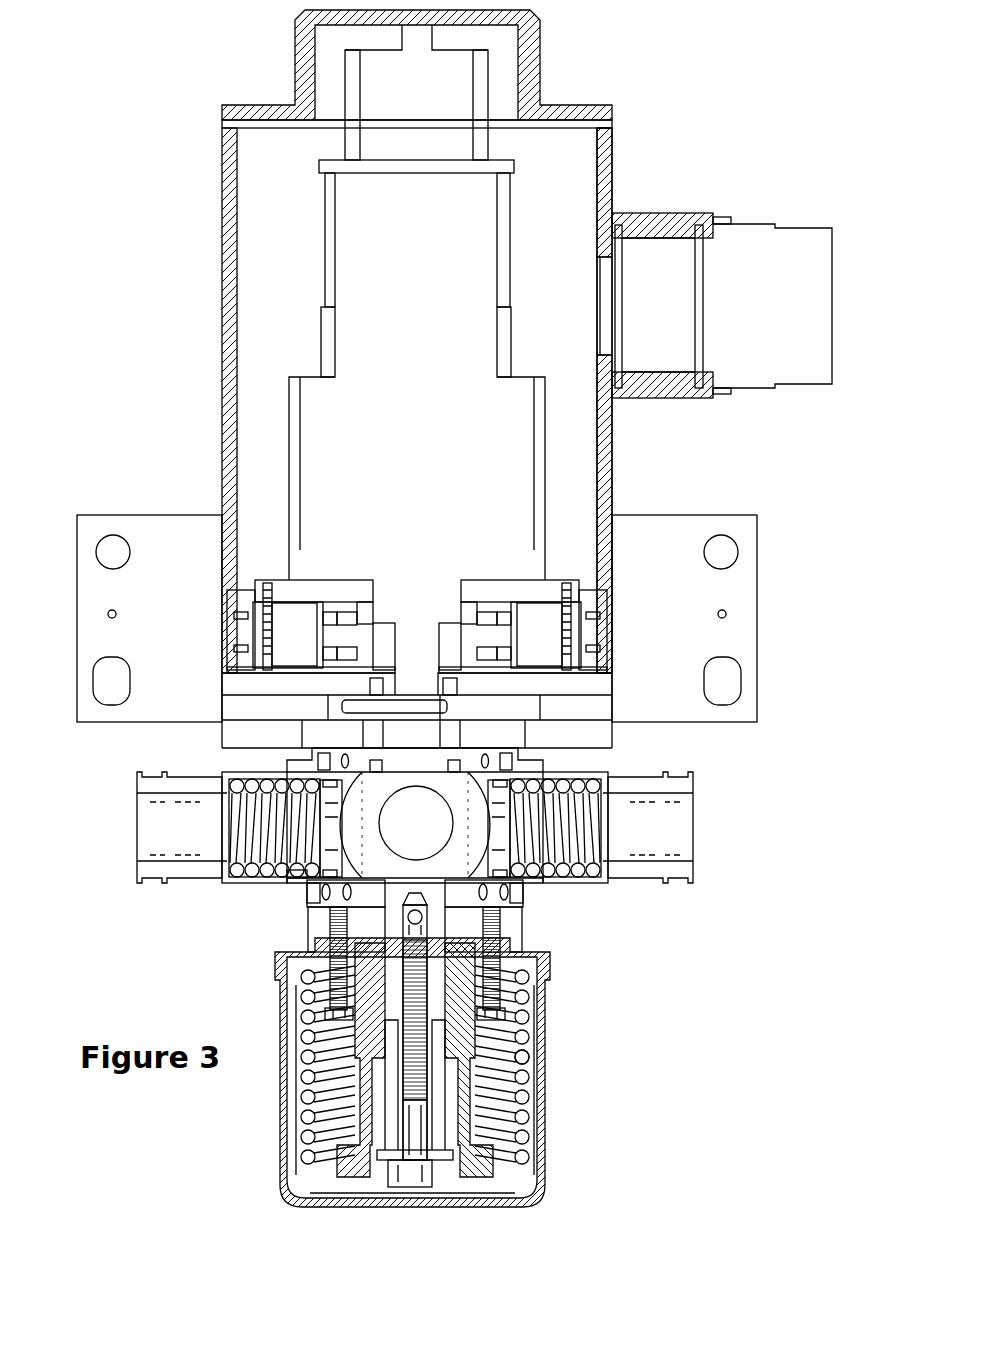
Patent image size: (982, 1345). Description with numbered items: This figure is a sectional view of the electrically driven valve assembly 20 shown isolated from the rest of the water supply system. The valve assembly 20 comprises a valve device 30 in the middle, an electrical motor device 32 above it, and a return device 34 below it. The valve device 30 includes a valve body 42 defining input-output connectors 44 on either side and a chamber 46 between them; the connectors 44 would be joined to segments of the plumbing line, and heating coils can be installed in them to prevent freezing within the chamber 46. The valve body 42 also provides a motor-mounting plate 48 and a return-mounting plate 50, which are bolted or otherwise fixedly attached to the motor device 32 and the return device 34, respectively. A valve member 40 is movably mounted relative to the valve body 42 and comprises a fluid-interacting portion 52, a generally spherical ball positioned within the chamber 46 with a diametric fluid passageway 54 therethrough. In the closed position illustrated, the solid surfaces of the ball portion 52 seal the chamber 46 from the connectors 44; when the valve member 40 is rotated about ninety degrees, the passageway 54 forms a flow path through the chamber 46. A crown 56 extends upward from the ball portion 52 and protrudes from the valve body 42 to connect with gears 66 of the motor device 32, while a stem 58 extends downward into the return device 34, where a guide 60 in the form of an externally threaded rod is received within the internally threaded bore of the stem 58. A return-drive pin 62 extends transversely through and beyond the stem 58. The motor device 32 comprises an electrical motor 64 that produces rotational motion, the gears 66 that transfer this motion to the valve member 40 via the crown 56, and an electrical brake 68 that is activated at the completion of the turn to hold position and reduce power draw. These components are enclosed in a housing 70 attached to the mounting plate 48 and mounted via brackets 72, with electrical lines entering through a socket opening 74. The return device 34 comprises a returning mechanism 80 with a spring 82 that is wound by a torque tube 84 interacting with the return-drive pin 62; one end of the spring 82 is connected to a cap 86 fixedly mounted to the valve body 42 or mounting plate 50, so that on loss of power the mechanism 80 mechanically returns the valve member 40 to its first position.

The valve assembly 20 is at (613, 60).
The valve device 30 is at (116, 810).
The electrical motor device 32 is at (214, 372).
The return device 34 is at (246, 1135).
The valve member 40 is at (334, 822).
The valve body 42 is at (708, 798).
The input-output connectors 44 is at (210, 782).
The chamber 46 is at (299, 882).
The motor-mounting plate 48 is at (530, 770).
The return-mounting plate 50 is at (474, 846).
The fluid-interacting portion 52 is at (470, 880).
The fluid passageway 54 is at (401, 838).
The crown 56 is at (490, 712).
The stem 58 is at (424, 916).
The guide 60 is at (414, 1142).
The return-drive pin 62 is at (288, 1000).
The electrical motor 64 is at (445, 455).
The gears 66 is at (300, 613).
The electrical brake 68 is at (445, 105).
The housing 70 is at (606, 160).
The brackets 72 is at (101, 540).
The socket opening 74 is at (660, 218).
The returning mechanism 80 is at (524, 1105).
The spring 82 is at (500, 1078).
The torque tube 84 is at (480, 1165).
The cap 86 is at (323, 928).